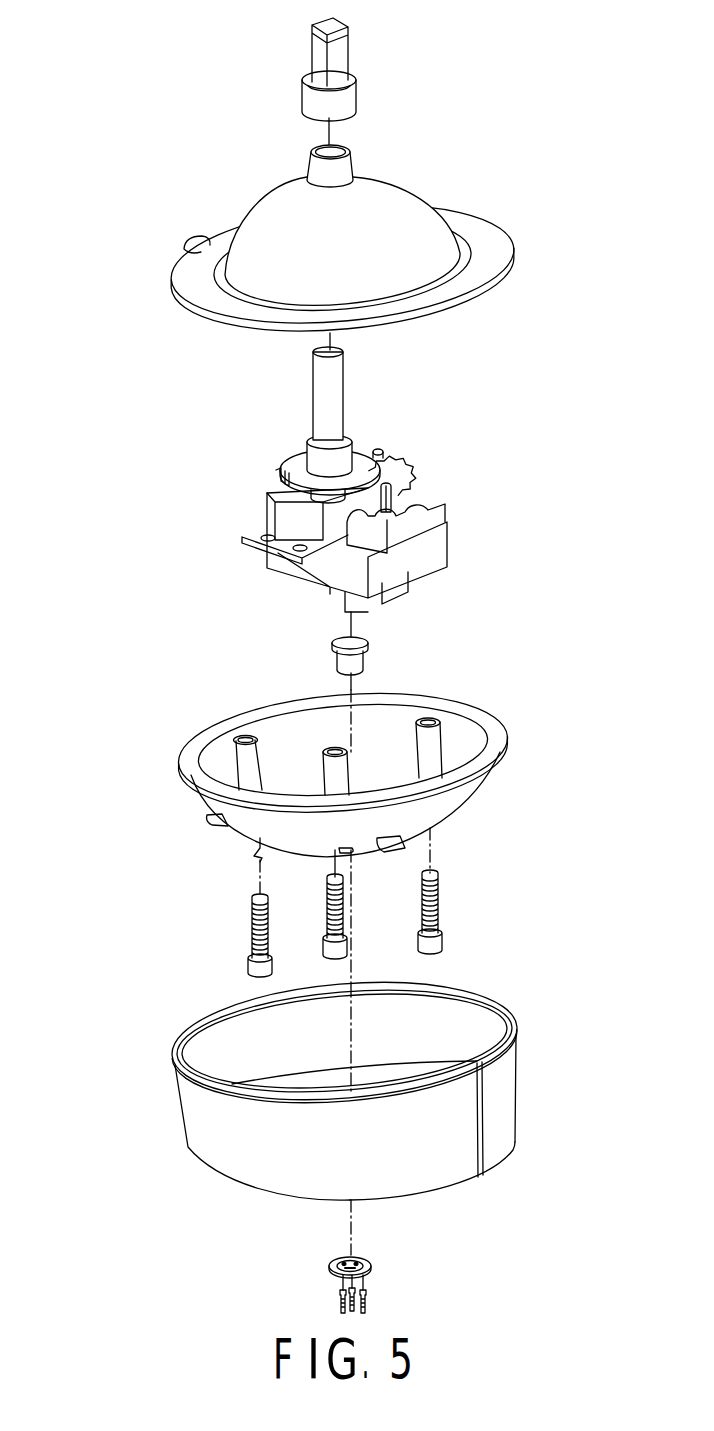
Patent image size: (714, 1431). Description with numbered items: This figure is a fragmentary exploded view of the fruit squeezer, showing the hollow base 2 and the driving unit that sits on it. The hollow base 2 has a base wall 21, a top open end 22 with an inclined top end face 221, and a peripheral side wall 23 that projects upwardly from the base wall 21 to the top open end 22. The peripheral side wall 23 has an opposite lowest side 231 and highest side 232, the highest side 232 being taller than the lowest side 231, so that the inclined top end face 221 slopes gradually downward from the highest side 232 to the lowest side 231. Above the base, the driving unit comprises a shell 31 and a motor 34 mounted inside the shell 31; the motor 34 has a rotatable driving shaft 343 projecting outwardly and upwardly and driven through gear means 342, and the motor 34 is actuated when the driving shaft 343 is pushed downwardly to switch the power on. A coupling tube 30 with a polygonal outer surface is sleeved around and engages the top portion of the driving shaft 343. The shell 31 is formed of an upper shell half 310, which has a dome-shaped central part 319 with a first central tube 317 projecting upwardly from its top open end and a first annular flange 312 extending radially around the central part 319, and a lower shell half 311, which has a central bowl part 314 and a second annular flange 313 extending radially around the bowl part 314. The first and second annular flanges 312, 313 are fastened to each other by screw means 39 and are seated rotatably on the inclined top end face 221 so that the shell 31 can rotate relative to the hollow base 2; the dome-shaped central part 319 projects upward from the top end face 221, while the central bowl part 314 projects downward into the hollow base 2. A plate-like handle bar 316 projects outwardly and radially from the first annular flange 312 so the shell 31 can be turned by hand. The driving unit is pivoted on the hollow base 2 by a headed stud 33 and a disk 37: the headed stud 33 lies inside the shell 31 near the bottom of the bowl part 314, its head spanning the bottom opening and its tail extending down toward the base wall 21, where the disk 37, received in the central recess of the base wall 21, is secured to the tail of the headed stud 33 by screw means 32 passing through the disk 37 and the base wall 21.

The hollow base 2 is at (335, 1135).
The base wall 21 is at (223, 1183).
The top open end 22 is at (329, 1041).
The peripheral side wall 23 is at (307, 1162).
The coupling tube 30 is at (358, 93).
The shell 31 is at (416, 772).
The screw means 32 is at (367, 1300).
The headed stud 33 is at (370, 652).
The motor 34 is at (448, 540).
The disk 37 is at (370, 1264).
The screw means 39 is at (439, 905).
The inclined top end face 221 is at (187, 1034).
The lowest side 231 is at (175, 1100).
The highest side 232 is at (508, 1112).
The upper shell half 310 is at (478, 232).
The lower shell half 311 is at (460, 808).
The first annular flange 312 is at (517, 252).
The second annular flange 313 is at (485, 726).
The central bowl part 314 is at (460, 787).
The handle bar 316 is at (193, 240).
The first central tube 317 is at (338, 169).
The dome-shaped central part 319 is at (277, 215).
The gear means 342 is at (402, 467).
The driving shaft 343 is at (335, 390).